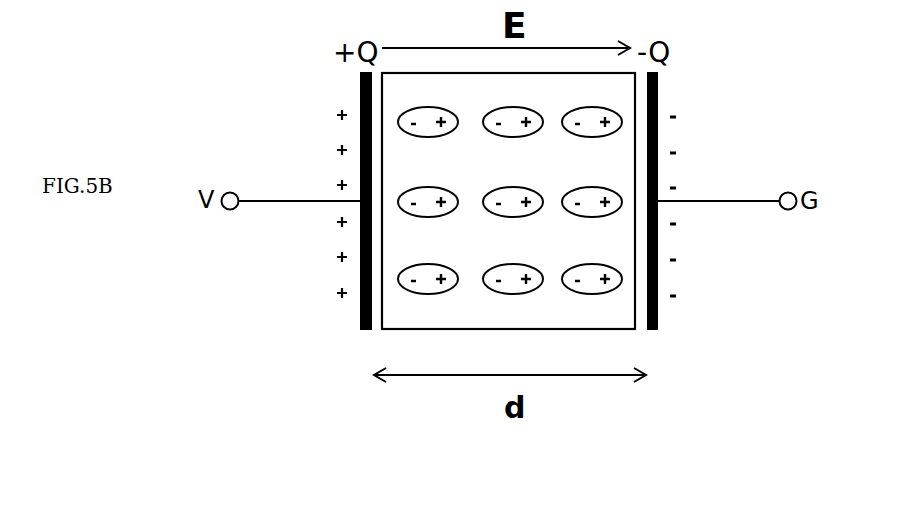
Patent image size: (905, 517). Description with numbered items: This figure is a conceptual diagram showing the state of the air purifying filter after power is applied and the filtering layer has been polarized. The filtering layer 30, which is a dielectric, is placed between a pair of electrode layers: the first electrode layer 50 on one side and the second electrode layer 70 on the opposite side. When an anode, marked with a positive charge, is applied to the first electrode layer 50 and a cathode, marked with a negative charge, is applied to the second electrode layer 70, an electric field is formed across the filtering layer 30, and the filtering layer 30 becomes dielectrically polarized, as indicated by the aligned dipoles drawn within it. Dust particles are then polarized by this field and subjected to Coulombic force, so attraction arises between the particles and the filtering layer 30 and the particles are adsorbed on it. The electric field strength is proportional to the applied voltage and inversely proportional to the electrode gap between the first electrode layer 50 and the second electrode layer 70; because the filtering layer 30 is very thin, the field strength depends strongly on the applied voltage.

The first electrode layer 50 is at (363, 330).
The second electrode layer 70 is at (654, 330).
The filtering layer 30 is at (572, 329).